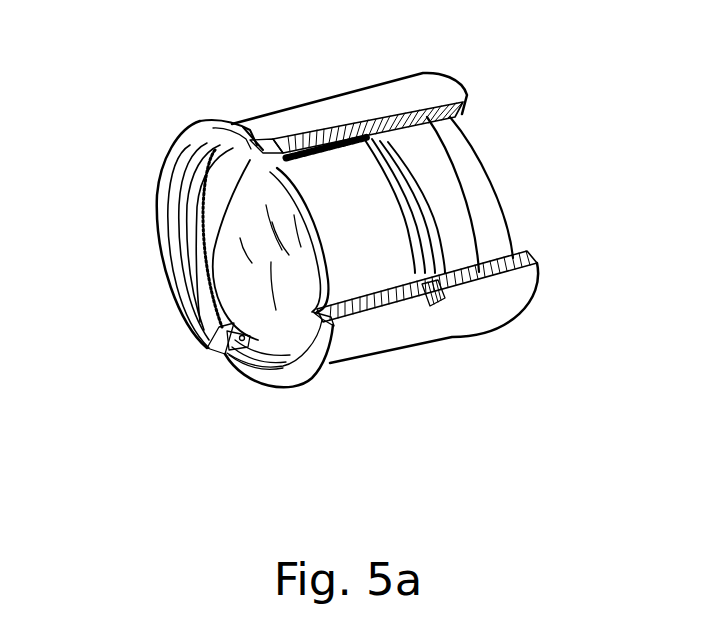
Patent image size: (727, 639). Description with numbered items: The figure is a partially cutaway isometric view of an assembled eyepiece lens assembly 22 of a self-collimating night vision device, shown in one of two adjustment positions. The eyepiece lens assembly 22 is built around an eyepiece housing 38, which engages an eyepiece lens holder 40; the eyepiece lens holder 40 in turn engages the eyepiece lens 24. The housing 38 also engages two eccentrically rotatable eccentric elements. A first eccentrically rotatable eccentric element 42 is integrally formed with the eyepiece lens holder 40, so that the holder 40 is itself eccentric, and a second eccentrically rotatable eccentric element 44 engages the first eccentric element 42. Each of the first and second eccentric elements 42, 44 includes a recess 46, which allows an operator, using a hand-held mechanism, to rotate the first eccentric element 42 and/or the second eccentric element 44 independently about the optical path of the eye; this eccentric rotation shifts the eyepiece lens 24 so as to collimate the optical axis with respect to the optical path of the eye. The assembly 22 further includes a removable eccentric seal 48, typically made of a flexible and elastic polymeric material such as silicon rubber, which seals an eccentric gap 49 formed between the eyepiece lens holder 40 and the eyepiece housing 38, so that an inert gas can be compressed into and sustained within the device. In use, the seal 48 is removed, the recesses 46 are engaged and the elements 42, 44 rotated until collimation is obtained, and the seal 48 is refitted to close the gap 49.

The eyepiece lens assembly 22 is at (172, 257).
The eyepiece lens 24 is at (290, 283).
The eyepiece housing 38 is at (368, 332).
The eyepiece lens holder 40 is at (370, 253).
The first eccentrically rotatable eccentric element 42 is at (213, 161).
The second eccentrically rotatable eccentric element 44 is at (341, 123).
The recess 46 is at (227, 348).
The eccentric seal 48 is at (298, 143).
The eccentric gap 49 is at (197, 206).